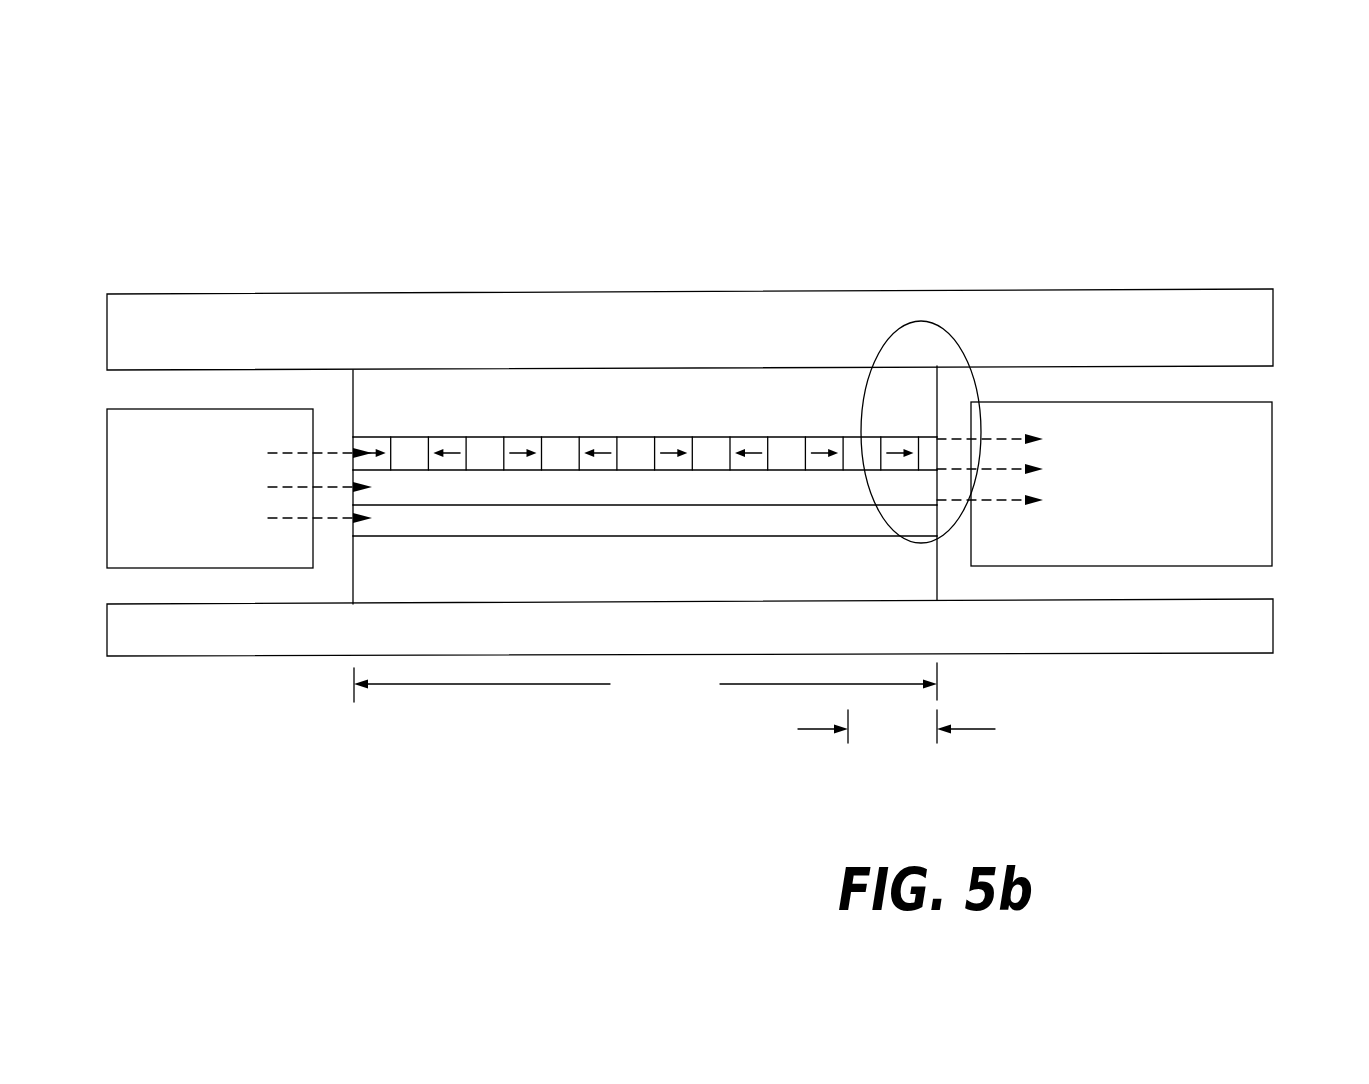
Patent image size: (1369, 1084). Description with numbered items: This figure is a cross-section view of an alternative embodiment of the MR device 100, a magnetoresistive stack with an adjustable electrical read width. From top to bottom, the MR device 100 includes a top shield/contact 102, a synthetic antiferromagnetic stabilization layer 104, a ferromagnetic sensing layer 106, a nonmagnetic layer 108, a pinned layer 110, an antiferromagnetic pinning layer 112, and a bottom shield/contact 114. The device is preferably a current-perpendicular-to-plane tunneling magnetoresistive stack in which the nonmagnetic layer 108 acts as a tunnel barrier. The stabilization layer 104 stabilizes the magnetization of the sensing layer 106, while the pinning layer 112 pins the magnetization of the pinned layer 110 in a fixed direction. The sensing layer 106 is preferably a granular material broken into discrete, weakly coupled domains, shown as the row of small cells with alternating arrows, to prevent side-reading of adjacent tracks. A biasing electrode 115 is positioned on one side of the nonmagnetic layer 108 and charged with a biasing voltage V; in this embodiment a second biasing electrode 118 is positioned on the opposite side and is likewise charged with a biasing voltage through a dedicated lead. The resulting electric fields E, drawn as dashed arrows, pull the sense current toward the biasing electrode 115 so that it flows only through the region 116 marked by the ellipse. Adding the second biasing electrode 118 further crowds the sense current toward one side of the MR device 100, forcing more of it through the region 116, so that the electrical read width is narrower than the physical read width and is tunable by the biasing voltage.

The MR device 100 is at (832, 177).
The top shield/contact 102 is at (240, 313).
The synthetic antiferromagnetic (SAF) stabilization layer 104 is at (430, 388).
The ferromagnetic sensing layer 106 is at (473, 452).
The nonmagnetic layer 108 is at (540, 483).
The pinned layer 110 is at (595, 523).
The antiferromagnetic (AFM) pinning layer 112 is at (652, 573).
The bottom shield/contact 114 is at (232, 650).
The biasing electrode 115 is at (1255, 453).
The region 116 is at (935, 318).
The second biasing electrode 118 is at (108, 475).